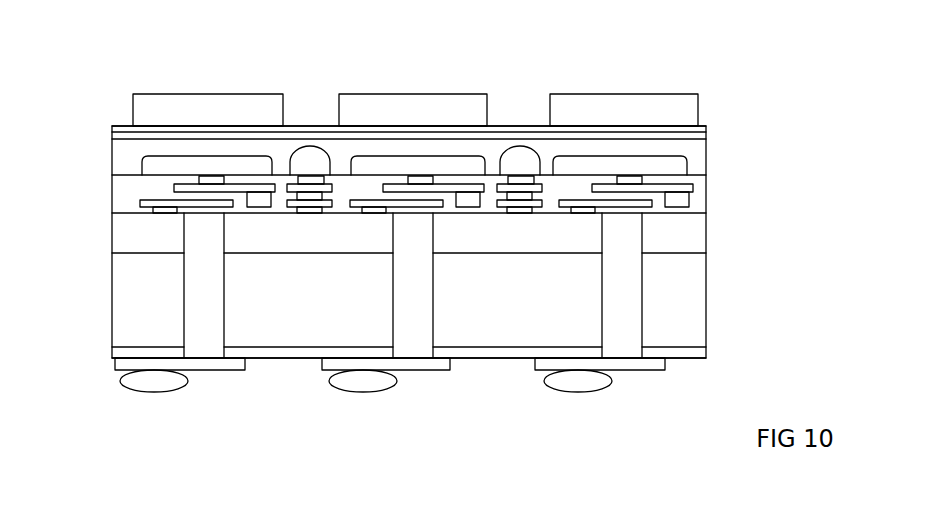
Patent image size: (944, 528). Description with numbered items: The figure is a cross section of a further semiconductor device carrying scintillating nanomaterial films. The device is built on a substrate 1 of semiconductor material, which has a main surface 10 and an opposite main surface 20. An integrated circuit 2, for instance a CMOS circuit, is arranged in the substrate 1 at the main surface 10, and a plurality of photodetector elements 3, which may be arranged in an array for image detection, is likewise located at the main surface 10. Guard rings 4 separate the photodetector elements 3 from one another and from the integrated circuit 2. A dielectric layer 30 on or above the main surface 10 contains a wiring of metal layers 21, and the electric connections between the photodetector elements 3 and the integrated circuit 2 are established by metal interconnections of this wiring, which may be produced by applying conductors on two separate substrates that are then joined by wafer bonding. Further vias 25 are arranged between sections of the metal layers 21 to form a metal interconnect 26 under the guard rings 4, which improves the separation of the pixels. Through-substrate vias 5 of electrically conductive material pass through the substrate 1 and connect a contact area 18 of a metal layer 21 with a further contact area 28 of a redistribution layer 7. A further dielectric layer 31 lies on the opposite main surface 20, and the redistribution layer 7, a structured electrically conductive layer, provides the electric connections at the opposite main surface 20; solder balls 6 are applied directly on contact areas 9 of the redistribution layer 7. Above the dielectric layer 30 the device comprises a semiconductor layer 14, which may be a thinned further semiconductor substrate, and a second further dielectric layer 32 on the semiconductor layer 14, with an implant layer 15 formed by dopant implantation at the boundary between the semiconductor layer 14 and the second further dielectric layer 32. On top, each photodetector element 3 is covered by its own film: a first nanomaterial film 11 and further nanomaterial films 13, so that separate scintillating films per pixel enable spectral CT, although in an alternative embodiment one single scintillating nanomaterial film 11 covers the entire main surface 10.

The substrate 1 is at (683, 298).
The integrated circuit 2 is at (710, 236).
The photodetector element 3 is at (155, 168).
The guard ring 4 is at (312, 158).
The through-substrate via 5 is at (200, 308).
The solder ball 6 is at (148, 382).
The redistribution layer 7 is at (227, 363).
The contact area 9 is at (168, 372).
The main surface 10 is at (131, 214).
The first nanomaterial film 11 is at (210, 107).
The further nanomaterial film 13 is at (428, 106).
The semiconductor layer 14 is at (700, 157).
The implant layer 15 is at (706, 138).
The contact area 18 is at (209, 213).
The opposite main surface 20 is at (140, 347).
The metal layer 21 is at (173, 187).
The further via 25 is at (309, 213).
The metal interconnect 26 is at (324, 213).
The further contact area 28 is at (203, 358).
The dielectric layer 30 is at (703, 199).
The further dielectric layer 31 is at (693, 352).
The second further dielectric layer 32 is at (703, 131).